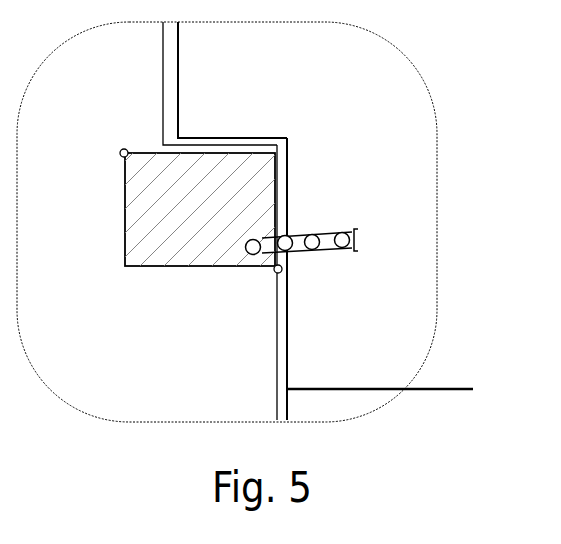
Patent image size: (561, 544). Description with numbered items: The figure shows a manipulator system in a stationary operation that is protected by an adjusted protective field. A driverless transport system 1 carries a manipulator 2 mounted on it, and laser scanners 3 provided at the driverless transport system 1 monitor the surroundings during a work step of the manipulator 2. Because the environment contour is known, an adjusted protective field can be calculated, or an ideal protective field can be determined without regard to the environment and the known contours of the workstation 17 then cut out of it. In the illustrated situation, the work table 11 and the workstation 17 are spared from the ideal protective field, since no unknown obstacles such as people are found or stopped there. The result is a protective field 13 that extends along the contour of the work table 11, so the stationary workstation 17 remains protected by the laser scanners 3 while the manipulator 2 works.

The driverless transport system 1 is at (182, 257).
The manipulator 2 is at (330, 230).
The laser scanner 3 is at (122, 147).
The work table 11 is at (181, 80).
The protective field 13 is at (277, 359).
The workstation 17 is at (362, 349).